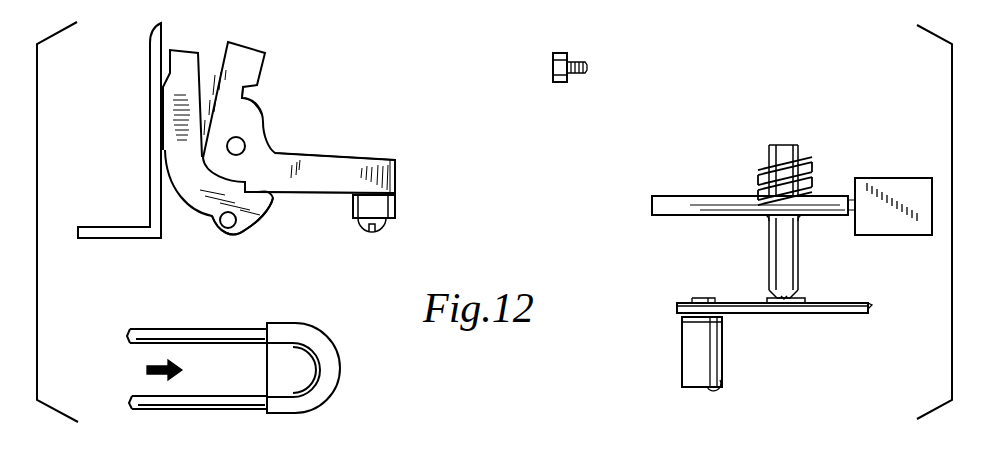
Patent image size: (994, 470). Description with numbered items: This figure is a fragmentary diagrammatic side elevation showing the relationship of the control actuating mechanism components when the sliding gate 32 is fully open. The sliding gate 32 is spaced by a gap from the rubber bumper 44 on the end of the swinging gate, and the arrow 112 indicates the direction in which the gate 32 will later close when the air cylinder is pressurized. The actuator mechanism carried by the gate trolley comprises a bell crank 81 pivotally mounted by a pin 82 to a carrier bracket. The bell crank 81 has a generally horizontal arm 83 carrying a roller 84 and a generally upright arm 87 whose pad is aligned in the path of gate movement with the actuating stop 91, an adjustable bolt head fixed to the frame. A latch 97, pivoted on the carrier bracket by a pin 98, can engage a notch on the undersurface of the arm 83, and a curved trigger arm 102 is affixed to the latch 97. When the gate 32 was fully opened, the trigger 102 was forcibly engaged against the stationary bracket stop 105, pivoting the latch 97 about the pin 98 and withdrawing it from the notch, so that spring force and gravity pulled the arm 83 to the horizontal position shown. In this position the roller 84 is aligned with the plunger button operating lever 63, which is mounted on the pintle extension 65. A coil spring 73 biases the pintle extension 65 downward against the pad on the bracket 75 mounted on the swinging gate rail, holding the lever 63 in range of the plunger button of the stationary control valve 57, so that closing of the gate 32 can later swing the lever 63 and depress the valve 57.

The sliding gate 32 is at (242, 328).
The rubber bumper 44 is at (690, 345).
The control valve 57 is at (903, 195).
The plunger button operating lever 63 is at (680, 200).
The pintle extension 65 is at (777, 235).
The coil spring 73 is at (763, 167).
The bracket 75 is at (847, 307).
The bell crank 81 is at (246, 96).
The pin 82 is at (237, 147).
The horizontal arm 83 is at (378, 167).
The roller 84 is at (385, 210).
The upright arm 87 is at (247, 52).
The actuating stop 91 is at (553, 55).
The latch 97 is at (255, 215).
The pin 98 is at (223, 227).
The trigger arm 102 is at (187, 55).
The bracket stop 105 is at (150, 87).
The arrow 112 is at (147, 370).